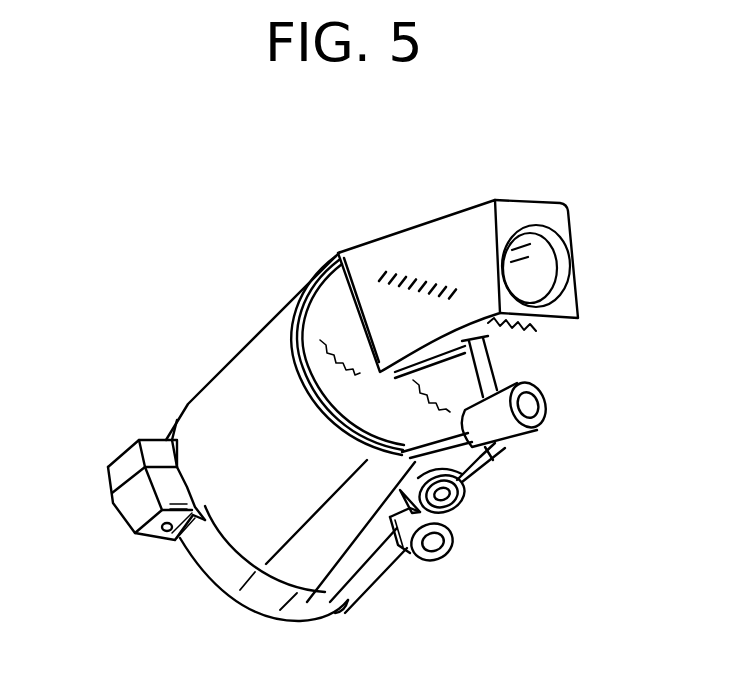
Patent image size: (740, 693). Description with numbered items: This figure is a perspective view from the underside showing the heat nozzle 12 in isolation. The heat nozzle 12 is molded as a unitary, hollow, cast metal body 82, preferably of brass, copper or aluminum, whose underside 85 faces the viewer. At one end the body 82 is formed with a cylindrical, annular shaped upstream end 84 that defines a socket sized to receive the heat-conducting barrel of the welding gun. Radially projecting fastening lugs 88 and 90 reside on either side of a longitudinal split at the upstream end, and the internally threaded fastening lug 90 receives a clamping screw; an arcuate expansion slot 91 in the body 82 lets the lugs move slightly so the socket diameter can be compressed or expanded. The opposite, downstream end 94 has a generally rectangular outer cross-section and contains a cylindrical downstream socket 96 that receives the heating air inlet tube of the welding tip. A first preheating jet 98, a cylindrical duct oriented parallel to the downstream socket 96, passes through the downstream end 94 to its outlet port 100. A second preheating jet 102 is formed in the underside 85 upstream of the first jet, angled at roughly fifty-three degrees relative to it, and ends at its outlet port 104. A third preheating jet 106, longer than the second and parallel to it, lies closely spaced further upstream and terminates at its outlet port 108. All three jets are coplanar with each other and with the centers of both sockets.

The heat nozzle 12 is at (268, 278).
The metal body 82 is at (250, 378).
The upstream end 84 is at (197, 417).
The underside 85 is at (353, 560).
The fastening lug 88 is at (122, 462).
The fastening lug 90 is at (135, 510).
The arcuate expansion slot 91 is at (230, 535).
The downstream end 94 is at (407, 232).
The downstream socket 96 is at (543, 282).
The first preheating jet 98 is at (537, 390).
The outlet port 100 is at (550, 402).
The second preheating jet 102 is at (452, 502).
The outlet port 104 is at (455, 492).
The third preheating jet 106 is at (447, 548).
The outlet port 108 is at (430, 558).